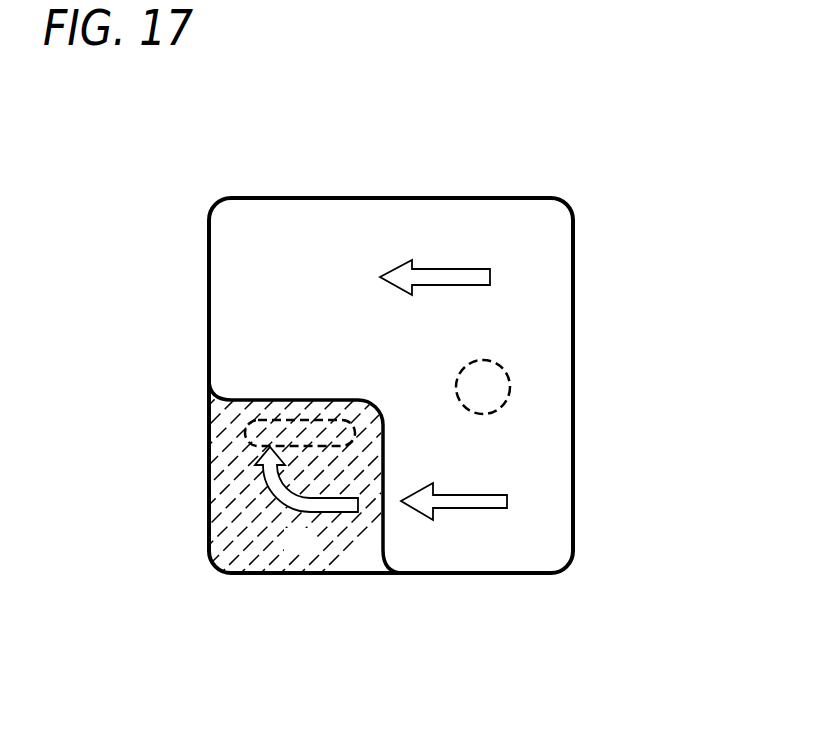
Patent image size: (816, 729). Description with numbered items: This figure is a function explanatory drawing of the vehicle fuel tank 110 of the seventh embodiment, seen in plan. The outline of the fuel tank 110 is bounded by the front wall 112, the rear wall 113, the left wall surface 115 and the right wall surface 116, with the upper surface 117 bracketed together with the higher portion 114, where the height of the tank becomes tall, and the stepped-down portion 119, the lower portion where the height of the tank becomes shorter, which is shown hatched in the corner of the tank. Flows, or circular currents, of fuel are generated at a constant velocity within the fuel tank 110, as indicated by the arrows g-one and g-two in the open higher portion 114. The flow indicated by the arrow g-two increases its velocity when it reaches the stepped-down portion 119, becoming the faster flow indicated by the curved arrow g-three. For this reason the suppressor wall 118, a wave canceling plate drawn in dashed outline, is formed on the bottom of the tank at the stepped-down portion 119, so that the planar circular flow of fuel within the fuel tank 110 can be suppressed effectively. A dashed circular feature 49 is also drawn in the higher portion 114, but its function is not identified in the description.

The vehicle fuel tank 110 is at (256, 172).
The front wall 112 is at (207, 242).
The rear wall 113 is at (573, 248).
The higher portion 114 is at (235, 353).
The left wall surface 115 is at (448, 573).
The right wall surface 116 is at (353, 198).
The upper surface 117 is at (67, 299).
The suppressor wall 118 is at (290, 420).
The stepped-down portion 119 is at (233, 475).
The hole 49 is at (510, 387).